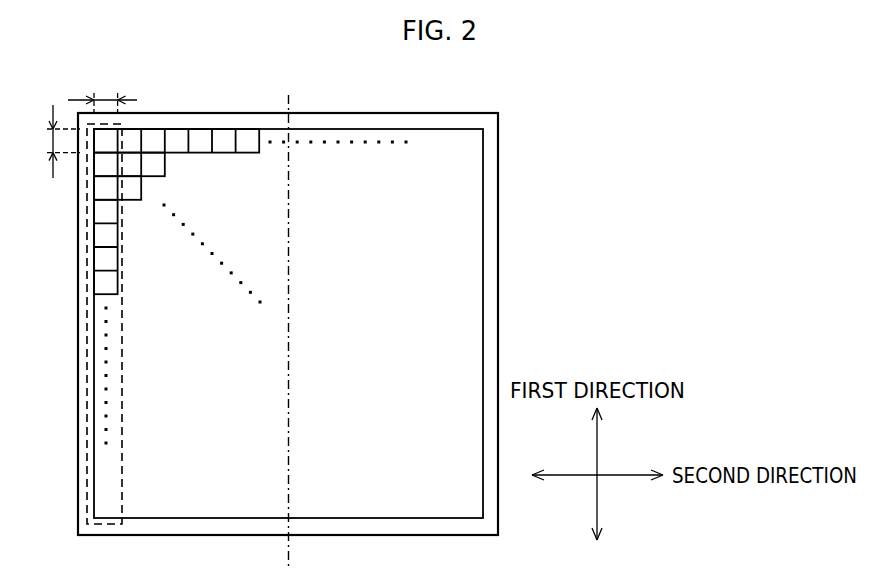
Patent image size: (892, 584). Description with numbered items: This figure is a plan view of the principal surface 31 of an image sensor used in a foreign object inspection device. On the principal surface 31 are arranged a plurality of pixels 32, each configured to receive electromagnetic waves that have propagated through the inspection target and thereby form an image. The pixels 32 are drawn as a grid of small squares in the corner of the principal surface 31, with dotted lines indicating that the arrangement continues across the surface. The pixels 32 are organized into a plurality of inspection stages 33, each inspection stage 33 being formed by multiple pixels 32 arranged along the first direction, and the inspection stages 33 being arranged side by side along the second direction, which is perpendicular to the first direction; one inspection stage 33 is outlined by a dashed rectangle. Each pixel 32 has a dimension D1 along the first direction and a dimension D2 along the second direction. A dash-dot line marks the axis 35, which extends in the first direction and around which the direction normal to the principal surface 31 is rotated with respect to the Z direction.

The principal surface 31 is at (527, 125).
The pixel 32 is at (177, 140).
The inspection stage 33 is at (122, 310).
The axis 35 is at (290, 552).
The dimension along the first direction D1 is at (49, 141).
The dimension along the second direction D2 is at (102, 90).